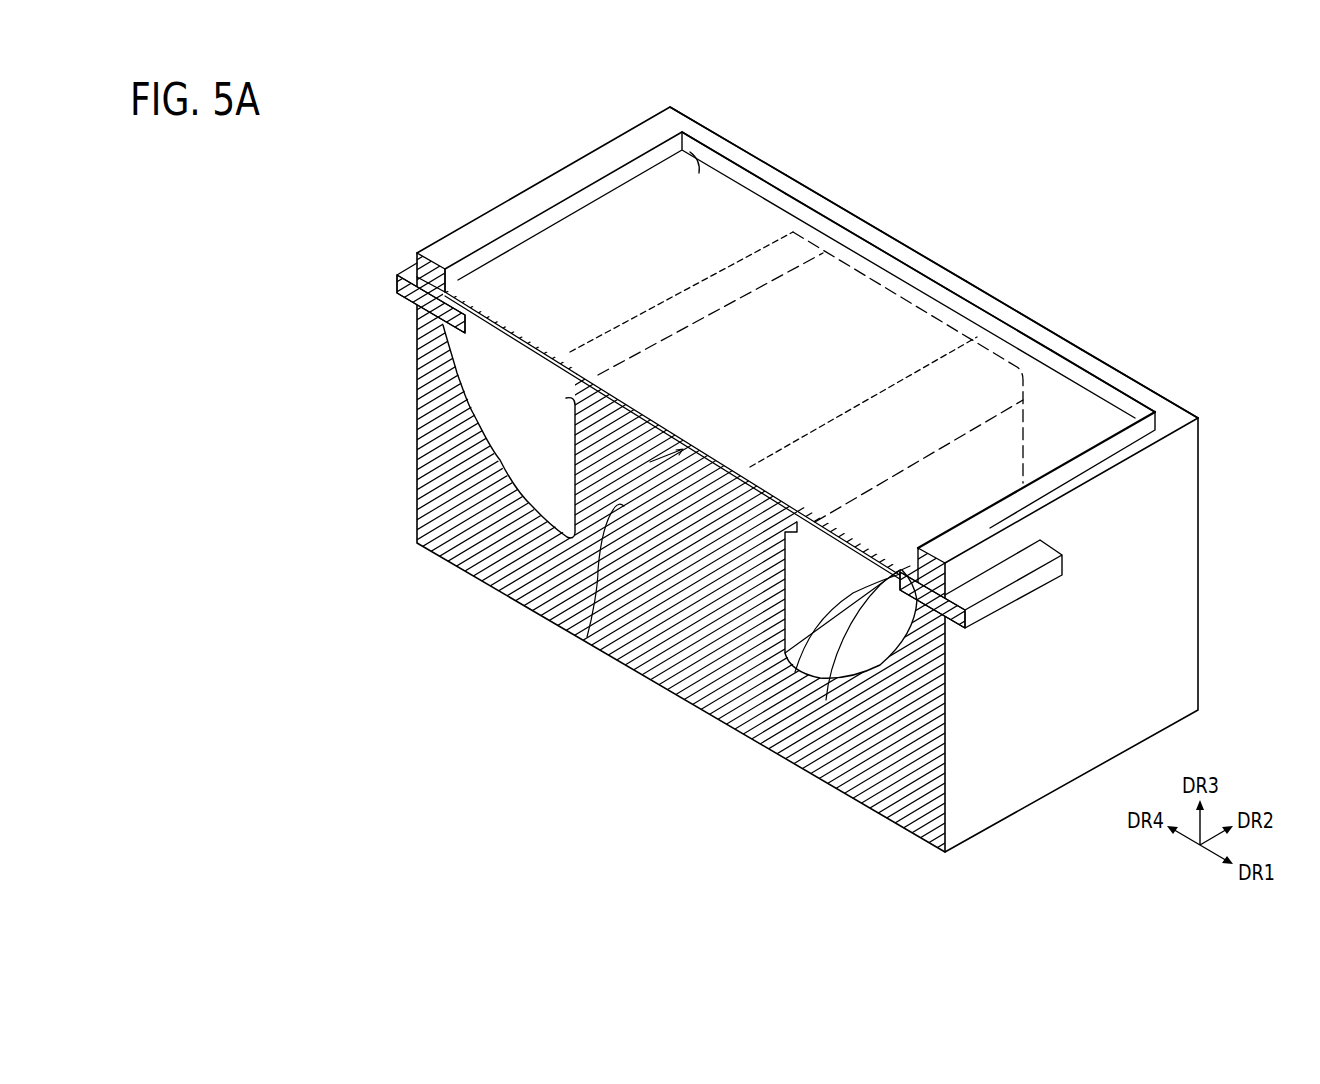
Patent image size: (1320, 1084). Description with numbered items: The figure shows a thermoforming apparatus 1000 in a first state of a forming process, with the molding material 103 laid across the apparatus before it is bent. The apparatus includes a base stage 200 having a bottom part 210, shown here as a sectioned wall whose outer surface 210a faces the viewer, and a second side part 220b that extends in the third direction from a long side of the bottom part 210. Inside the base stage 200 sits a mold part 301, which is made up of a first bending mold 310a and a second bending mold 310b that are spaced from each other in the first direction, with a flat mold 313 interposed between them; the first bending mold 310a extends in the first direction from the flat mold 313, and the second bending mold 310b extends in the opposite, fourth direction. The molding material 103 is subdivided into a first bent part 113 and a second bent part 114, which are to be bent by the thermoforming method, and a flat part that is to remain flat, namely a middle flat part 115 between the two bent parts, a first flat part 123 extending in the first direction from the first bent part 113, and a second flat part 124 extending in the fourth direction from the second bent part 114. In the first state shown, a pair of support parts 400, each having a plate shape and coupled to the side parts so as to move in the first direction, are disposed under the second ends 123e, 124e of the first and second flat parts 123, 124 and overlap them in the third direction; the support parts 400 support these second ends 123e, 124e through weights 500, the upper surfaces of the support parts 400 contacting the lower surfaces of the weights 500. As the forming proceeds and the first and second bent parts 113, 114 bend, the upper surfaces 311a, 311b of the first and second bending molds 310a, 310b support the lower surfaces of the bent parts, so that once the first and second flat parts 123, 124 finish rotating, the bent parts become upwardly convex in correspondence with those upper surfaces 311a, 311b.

The thermoforming apparatus 1000 is at (1196, 179).
The molding material 103 is at (1134, 302).
The second flat part 124 is at (767, 203).
The second bent part 114 is at (840, 253).
The middle flat part 115 is at (907, 287).
The first bent part 113 is at (1017, 353).
The first flat part 123 is at (1063, 390).
The second end of second flat part 124e is at (413, 305).
The second end of first flat part 123e is at (880, 592).
The second side part 220b is at (1140, 393).
The base stage 200 is at (872, 922).
The bottom part 210 is at (877, 773).
The outer surface of bottom portion 210a is at (963, 808).
The mold part 301 is at (597, 793).
The first bending mold 310a is at (787, 603).
The second bending mold 310b is at (573, 403).
The upper surface of first bending mold 311a is at (793, 515).
The upper surface of second bending mold 311b is at (598, 387).
The flat mold 313 is at (587, 637).
The support part 400 is at (397, 284).
The weight 500 is at (577, 230).